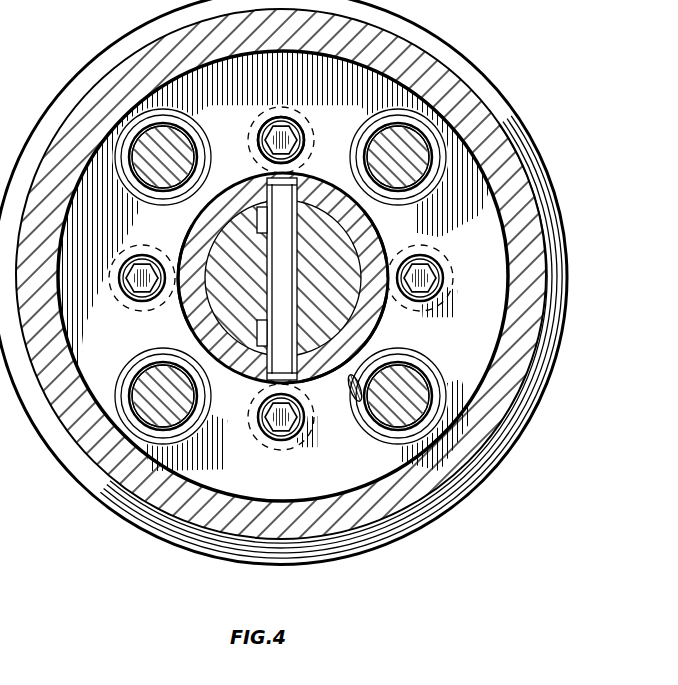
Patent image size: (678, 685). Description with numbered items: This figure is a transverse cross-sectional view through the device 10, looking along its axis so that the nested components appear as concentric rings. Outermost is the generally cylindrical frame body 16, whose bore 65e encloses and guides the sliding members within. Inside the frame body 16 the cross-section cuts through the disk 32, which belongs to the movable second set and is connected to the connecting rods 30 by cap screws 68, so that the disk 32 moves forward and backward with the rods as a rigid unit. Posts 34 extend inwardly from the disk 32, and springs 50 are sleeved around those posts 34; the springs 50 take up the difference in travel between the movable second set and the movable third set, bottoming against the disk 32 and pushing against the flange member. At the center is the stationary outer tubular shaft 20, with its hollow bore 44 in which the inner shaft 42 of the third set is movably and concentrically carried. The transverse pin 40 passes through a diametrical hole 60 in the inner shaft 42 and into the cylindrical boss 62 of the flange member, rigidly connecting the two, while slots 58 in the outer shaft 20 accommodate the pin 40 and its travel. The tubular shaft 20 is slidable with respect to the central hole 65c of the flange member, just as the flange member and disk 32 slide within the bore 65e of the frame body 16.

The device 10 is at (543, 69).
The frame body 16 is at (478, 74).
The outer tubular shaft 20 is at (283, 285).
The connecting rods 30 is at (258, 152).
The disk 32 is at (510, 143).
The posts 34 is at (187, 148).
The transverse pin 40 is at (309, 392).
The inner shaft 42 is at (298, 192).
The hollow bore 44 is at (384, 242).
The springs 50 is at (455, 132).
The slots 58 is at (250, 210).
The diametrical hole 60 is at (190, 324).
The cylindrical boss 62 is at (373, 323).
The central hole 65c is at (349, 388).
The bore 65e is at (528, 193).
The cap screws 68 is at (298, 126).